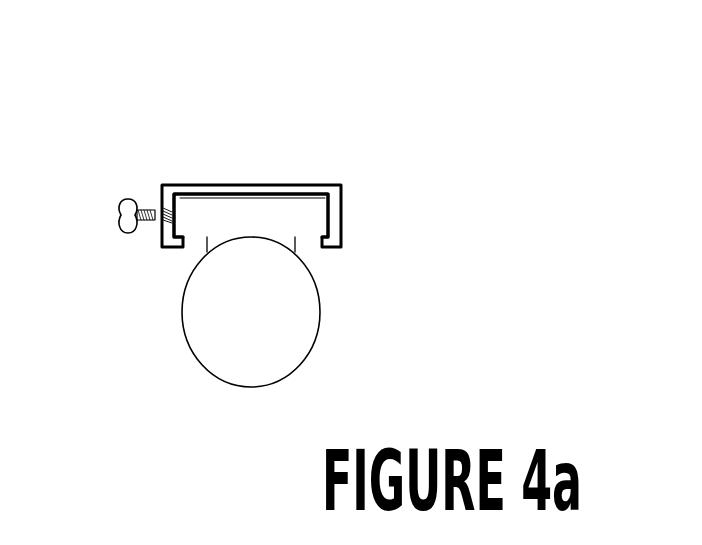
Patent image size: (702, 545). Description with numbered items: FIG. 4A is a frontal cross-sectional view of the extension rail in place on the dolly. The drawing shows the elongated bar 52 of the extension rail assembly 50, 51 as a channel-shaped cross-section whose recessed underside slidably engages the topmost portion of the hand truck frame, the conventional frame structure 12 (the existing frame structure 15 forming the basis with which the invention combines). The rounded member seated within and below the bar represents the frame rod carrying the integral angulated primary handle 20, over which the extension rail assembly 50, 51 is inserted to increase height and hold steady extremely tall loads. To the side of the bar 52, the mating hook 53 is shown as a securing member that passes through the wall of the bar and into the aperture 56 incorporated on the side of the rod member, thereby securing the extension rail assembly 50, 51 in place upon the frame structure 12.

The frame structure 12 is at (343, 279).
The frame structure 15 is at (305, 230).
The primary handle 20 is at (288, 345).
The extension rail assembly 50 is at (375, 233).
The extension rail assembly 51 is at (341, 185).
The elongated bar 52 is at (164, 187).
The mating hook 53 is at (119, 215).
The aperture 56 is at (161, 212).